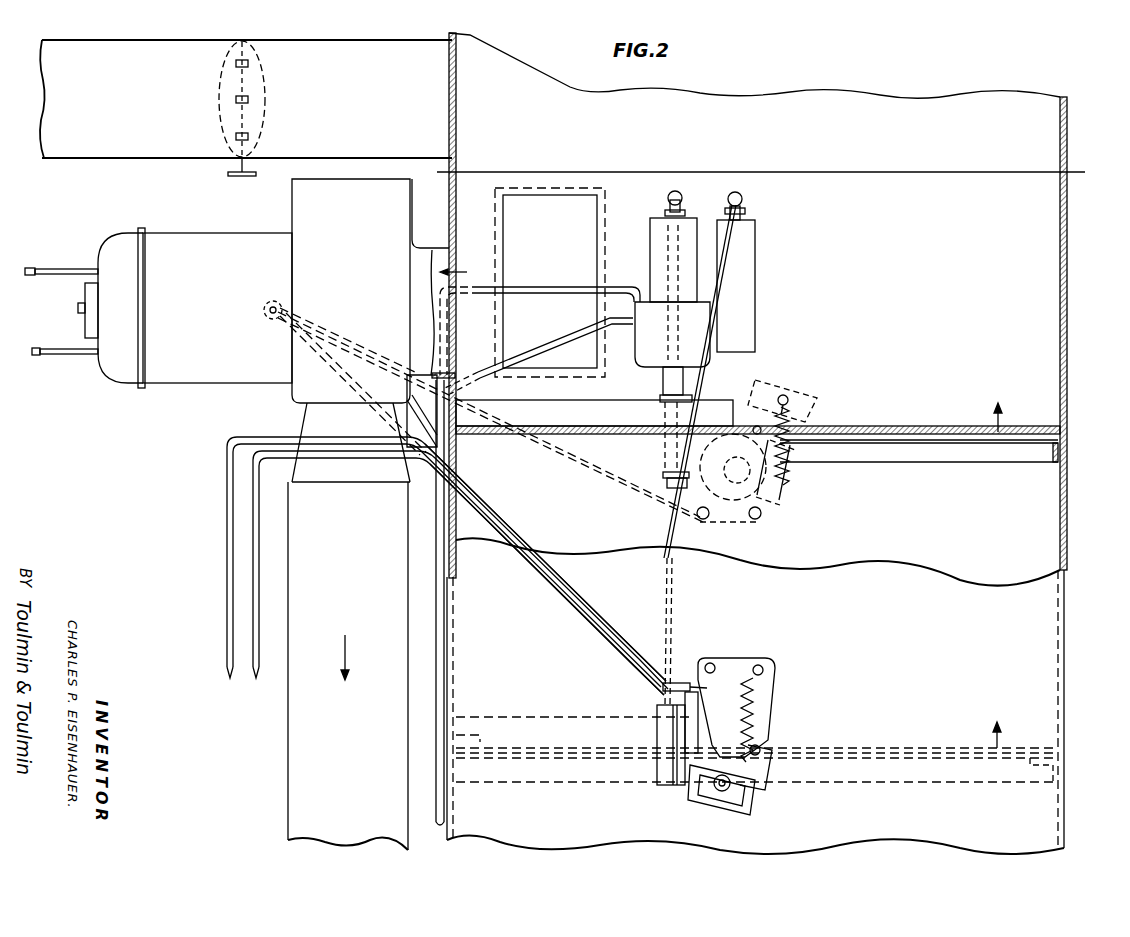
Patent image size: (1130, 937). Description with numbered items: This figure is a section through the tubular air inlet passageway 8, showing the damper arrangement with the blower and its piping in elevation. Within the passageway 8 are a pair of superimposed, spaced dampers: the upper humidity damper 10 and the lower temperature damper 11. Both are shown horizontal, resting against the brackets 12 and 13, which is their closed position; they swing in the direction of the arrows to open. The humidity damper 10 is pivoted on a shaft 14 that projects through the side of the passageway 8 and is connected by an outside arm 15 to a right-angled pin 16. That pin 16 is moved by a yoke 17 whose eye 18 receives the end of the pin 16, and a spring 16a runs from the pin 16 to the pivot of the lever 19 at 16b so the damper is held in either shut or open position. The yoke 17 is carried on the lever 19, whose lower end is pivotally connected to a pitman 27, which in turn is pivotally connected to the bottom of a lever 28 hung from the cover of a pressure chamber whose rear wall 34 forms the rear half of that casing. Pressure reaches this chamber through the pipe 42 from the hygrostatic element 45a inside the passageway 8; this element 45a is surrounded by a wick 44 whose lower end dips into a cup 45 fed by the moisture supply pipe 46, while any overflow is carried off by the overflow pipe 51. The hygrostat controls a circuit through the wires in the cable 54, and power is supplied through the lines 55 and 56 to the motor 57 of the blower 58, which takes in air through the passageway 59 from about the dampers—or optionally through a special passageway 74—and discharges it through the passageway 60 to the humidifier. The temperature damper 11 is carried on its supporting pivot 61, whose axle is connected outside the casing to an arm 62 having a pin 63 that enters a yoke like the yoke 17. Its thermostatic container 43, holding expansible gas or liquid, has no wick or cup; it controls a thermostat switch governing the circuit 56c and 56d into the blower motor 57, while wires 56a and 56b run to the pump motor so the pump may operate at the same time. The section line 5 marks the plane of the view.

The section line 5 is at (760, 173).
The passageway 8 is at (1066, 300).
The humidity damper 10 is at (900, 430).
The temperature damper 11 is at (862, 748).
The bracket 12 is at (1052, 460).
The bracket 13 is at (1050, 772).
The shaft 14 is at (754, 426).
The outside arm 15 is at (774, 392).
The pin 16 is at (800, 388).
The spring 16a is at (790, 448).
The spring connection 16b is at (772, 500).
The yoke 17 is at (820, 410).
The eye 18 is at (806, 400).
The lever 19 is at (786, 482).
The pitman 27 is at (752, 520).
The lever 28 is at (702, 520).
The rear wall 34 is at (657, 768).
The pipe 42 is at (668, 195).
The container of expansible gas or liquid 43 is at (758, 275).
The wick 44 is at (650, 228).
The cup 45 is at (638, 365).
The hygrostatic element 45a is at (694, 235).
The moisture supply pipe 46 is at (622, 287).
The overflow pipe 51 is at (620, 322).
The cable 54 is at (566, 462).
The power line 55 is at (60, 357).
The power line 56 is at (57, 267).
The wire 56a is at (227, 522).
The wire 56b is at (253, 552).
The circuit 56c is at (584, 614).
The circuit 56d is at (592, 606).
The motor 57 is at (186, 380).
The blower 58 is at (292, 207).
The passageway 59 is at (432, 245).
The passageway 60 is at (300, 715).
The supporting pivot 61 is at (762, 748).
The arm 62 is at (772, 773).
The pin 63 is at (718, 792).
The special passageway 74 is at (62, 160).